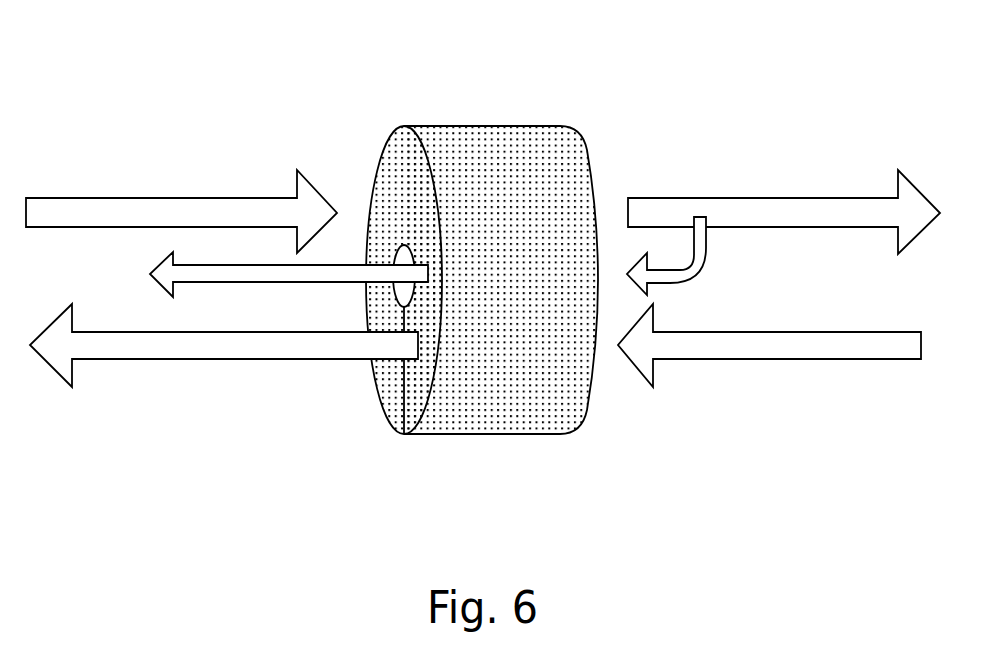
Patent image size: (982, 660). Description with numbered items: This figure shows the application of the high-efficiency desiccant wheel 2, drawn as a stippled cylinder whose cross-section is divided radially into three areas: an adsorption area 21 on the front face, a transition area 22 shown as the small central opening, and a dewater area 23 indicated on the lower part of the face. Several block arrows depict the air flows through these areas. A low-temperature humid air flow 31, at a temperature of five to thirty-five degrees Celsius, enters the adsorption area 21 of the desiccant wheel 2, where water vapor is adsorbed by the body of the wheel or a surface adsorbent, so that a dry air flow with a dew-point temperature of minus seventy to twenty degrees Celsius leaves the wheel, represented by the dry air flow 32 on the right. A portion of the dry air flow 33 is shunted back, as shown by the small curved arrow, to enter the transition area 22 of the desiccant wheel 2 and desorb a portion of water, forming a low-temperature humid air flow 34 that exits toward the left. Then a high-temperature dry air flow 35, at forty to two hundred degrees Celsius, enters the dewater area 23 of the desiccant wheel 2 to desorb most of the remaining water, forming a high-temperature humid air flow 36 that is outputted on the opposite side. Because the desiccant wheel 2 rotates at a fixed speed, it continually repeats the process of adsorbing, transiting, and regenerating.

The desiccant wheel 2 is at (474, 259).
The adsorption area 21 is at (398, 160).
The transition area 22 is at (412, 252).
The dewater area 23 is at (432, 340).
The low-temperature humid air flow 31 is at (121, 198).
The second flow arrow 32 is at (795, 198).
The portion of the dry air flow 33 is at (707, 255).
The low-temperature humid air flow 34 is at (168, 262).
The high-temperature dry air flow 35 is at (839, 359).
The high-temperature humid air flow 36 is at (240, 359).